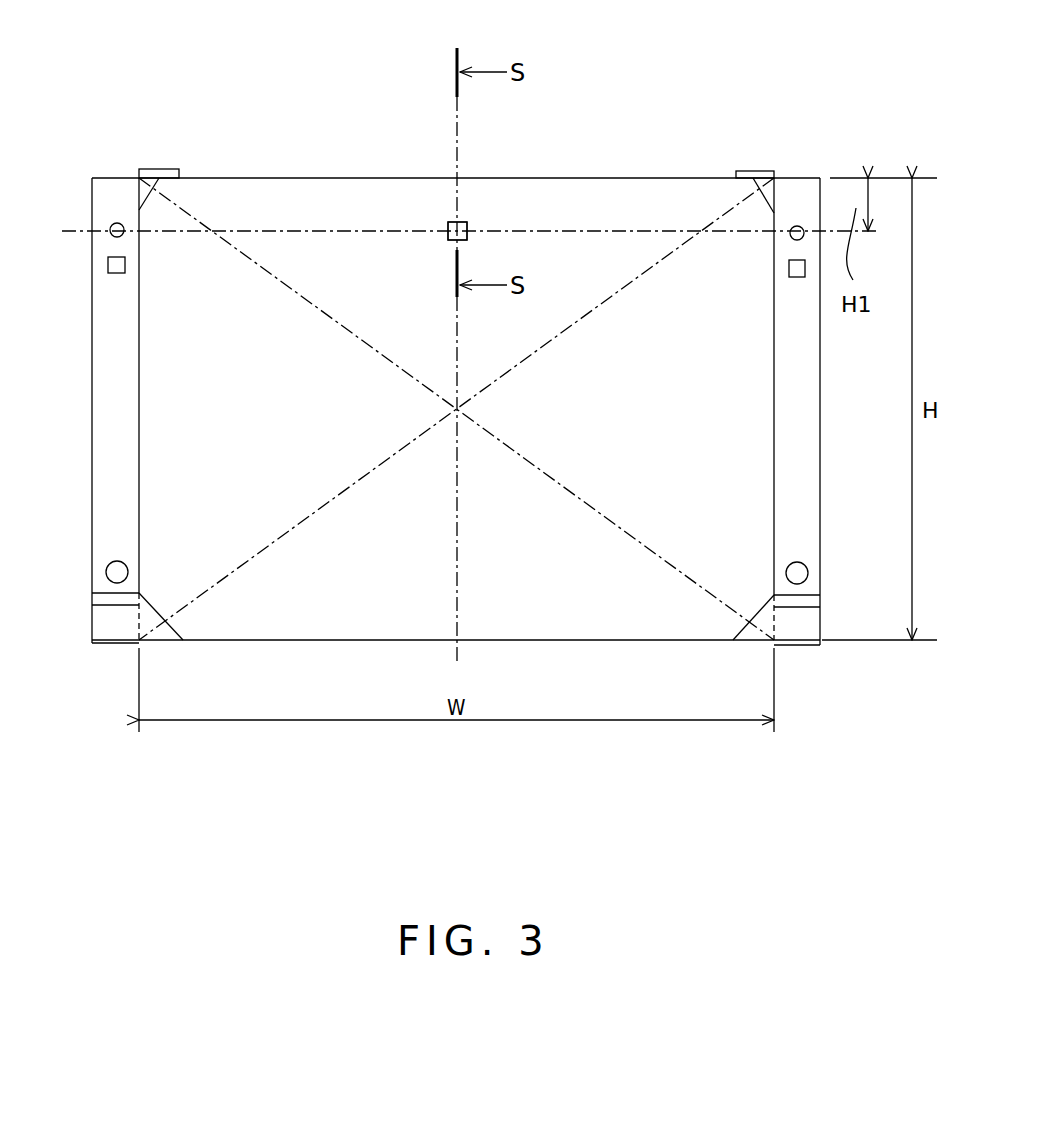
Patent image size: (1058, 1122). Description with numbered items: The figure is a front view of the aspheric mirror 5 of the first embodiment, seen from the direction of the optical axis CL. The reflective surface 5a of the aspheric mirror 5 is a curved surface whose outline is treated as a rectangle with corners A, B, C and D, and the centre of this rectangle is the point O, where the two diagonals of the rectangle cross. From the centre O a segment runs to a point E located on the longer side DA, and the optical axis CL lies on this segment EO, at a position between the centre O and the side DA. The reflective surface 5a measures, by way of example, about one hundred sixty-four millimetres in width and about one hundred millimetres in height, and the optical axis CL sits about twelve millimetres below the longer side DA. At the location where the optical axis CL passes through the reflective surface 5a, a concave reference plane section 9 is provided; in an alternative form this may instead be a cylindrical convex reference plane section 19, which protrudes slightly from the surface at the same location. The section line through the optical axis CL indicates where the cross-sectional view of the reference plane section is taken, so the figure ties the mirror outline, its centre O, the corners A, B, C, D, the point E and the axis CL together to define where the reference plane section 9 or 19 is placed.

The aspheric mirror 5 is at (236, 177).
The reflective surface 5a is at (375, 250).
The concave reference plane section 9 is at (480, 215).
The reference plane section 19 is at (457, 231).
The corner of rectangle ABCD A is at (130, 168).
The corner of rectangle ABCD B is at (132, 655).
The corner of rectangle ABCD C is at (782, 657).
The corner of rectangle ABCD D is at (782, 168).
The point on longer side DA E is at (462, 177).
The optical axis CL is at (443, 222).
The center of rectangle ABCD O is at (452, 408).